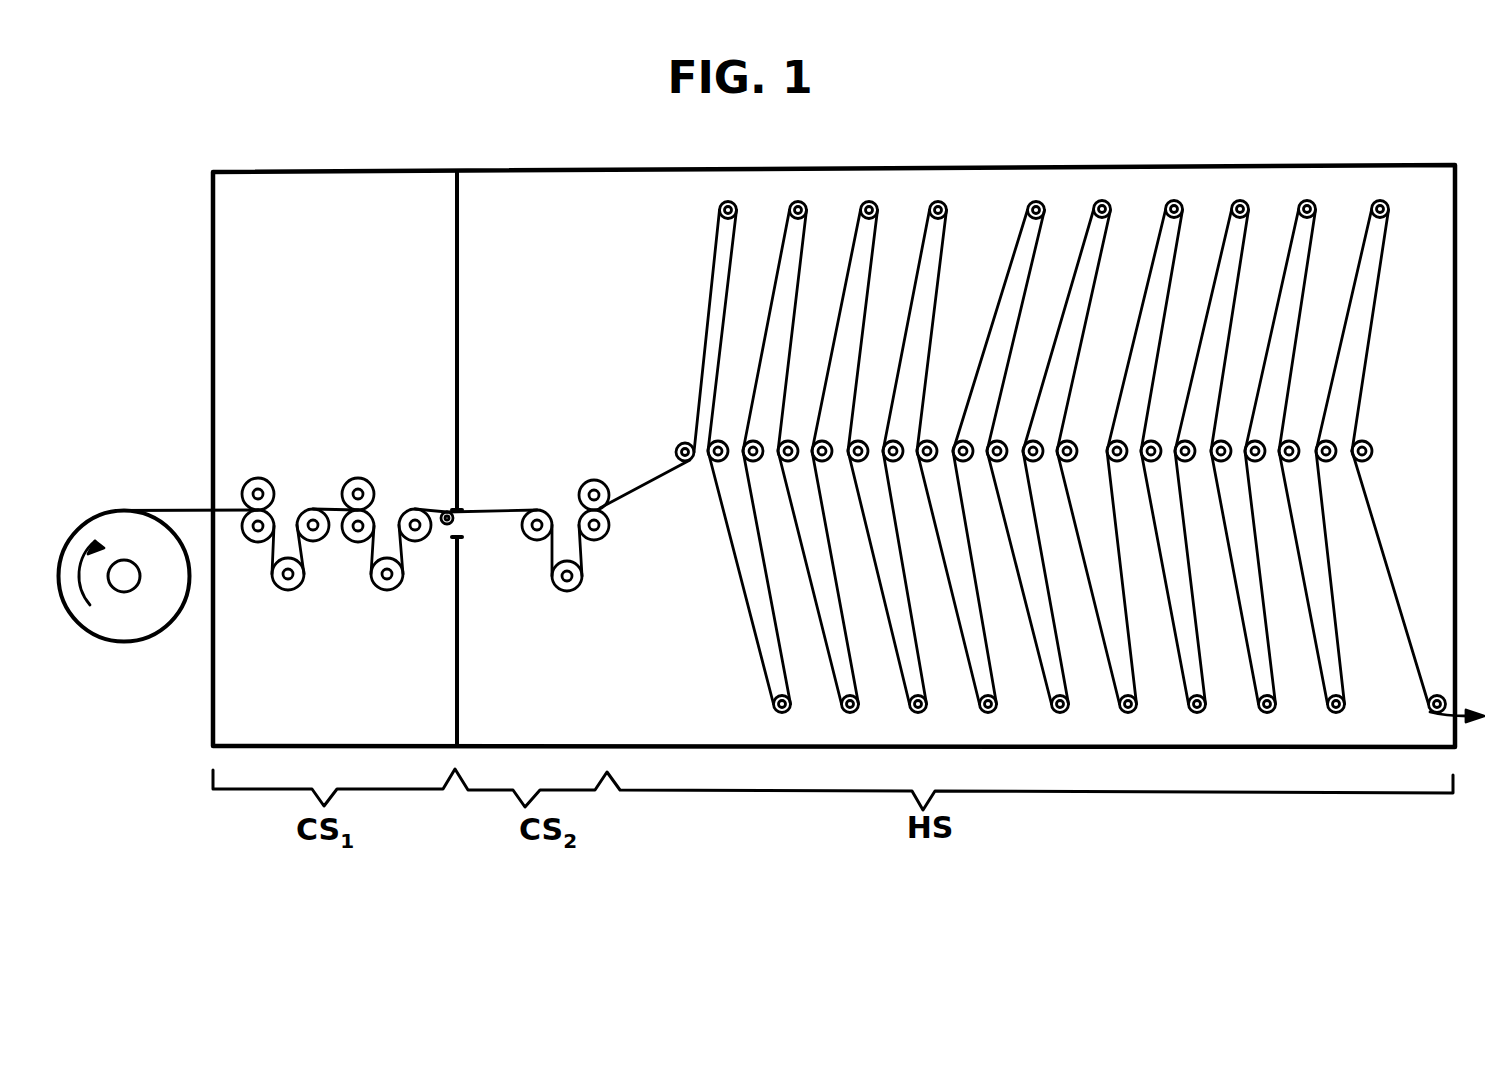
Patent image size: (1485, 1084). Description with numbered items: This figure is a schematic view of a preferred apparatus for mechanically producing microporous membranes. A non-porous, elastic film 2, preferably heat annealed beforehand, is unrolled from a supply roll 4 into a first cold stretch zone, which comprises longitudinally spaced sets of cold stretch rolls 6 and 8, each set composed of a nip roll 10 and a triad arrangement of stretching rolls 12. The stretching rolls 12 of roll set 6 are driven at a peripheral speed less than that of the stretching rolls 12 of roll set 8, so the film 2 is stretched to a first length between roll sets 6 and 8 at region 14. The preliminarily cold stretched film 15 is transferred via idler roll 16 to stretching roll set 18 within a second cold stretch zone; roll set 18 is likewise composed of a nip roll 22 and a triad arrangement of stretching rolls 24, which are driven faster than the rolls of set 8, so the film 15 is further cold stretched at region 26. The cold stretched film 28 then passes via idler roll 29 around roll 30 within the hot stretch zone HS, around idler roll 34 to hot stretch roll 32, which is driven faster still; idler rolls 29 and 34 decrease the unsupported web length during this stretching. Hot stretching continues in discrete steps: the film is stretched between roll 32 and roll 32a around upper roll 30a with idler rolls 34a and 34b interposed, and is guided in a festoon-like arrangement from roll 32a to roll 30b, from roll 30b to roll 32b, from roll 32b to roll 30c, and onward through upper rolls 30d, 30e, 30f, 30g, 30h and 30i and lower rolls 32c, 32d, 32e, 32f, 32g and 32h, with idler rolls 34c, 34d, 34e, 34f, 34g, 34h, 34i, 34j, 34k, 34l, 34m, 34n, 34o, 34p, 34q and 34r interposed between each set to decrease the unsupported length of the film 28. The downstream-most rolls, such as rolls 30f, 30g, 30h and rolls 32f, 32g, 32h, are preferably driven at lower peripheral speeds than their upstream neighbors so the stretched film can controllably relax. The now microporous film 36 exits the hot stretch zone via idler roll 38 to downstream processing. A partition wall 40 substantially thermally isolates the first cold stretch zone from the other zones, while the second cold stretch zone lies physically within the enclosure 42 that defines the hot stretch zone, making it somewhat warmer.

The non-porous elastic film 2 is at (141, 510).
The supply roll 4 is at (125, 642).
The cold stretch roll set 6 is at (253, 570).
The cold stretch roll set 8 is at (413, 586).
The nip roll 10 is at (250, 478).
The stretching rolls 12 is at (300, 508).
The region 14 is at (325, 496).
The preliminarily cold stretched film 15 is at (439, 522).
The idler roll 16 is at (455, 513).
The stretching roll set 18 is at (592, 582).
The nip roll 22 is at (583, 483).
The stretching rolls 24 is at (531, 540).
The region 26 is at (487, 510).
The cold stretched film 28 is at (632, 497).
The idler roll 29 is at (680, 445).
The roll 30 is at (717, 208).
The upper roll 30a is at (789, 213).
The upper roll 30b is at (861, 207).
The upper roll 30c is at (930, 207).
The upper roll 30d is at (1028, 207).
The upper roll 30e is at (1095, 205).
The upper roll 30f is at (1166, 205).
The upper roll 30g is at (1232, 205).
The upper roll 30h is at (1299, 205).
The upper roll 30i is at (1372, 205).
The hot stretch roll 32 is at (776, 710).
The lower roll 32a is at (857, 711).
The lower roll 32b is at (925, 711).
The lower roll 32c is at (995, 711).
The lower roll 32d is at (1067, 711).
The lower roll 32e is at (1135, 711).
The lower roll 32f is at (1204, 711).
The lower roll 32g is at (1274, 711).
The lower roll 32h is at (1344, 711).
The idler roll 34 is at (722, 443).
The idler roll 34a is at (757, 462).
The idler roll 34b is at (794, 443).
The idler roll 34c is at (826, 462).
The idler roll 34d is at (864, 443).
The idler roll 34e is at (897, 462).
The idler roll 34f is at (933, 443).
The idler roll 34g is at (967, 462).
The idler roll 34h is at (1003, 443).
The idler roll 34i is at (1037, 462).
The idler roll 34j is at (1072, 442).
The idler roll 34k is at (1121, 462).
The idler roll 34l is at (1157, 442).
The idler roll 34m is at (1189, 462).
The idler roll 34n is at (1227, 442).
The idler roll 34o is at (1259, 462).
The idler roll 34p is at (1295, 442).
The idler roll 34q is at (1330, 462).
The idler roll 34r is at (1369, 442).
The microporous film 36 is at (1396, 608).
The idler roll 38 is at (1432, 712).
The partition wall 40 is at (458, 310).
The enclosure 42 is at (716, 169).